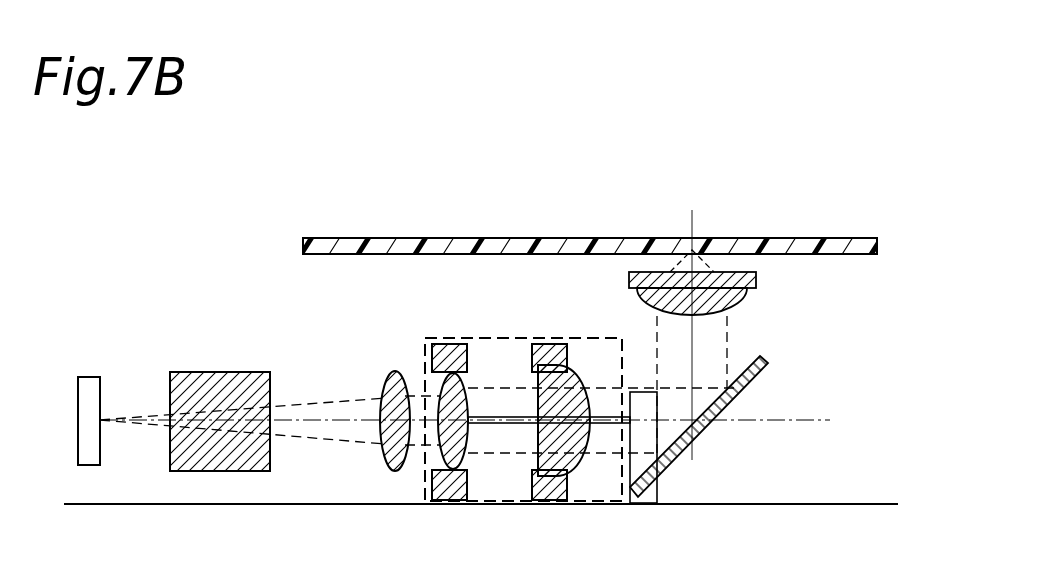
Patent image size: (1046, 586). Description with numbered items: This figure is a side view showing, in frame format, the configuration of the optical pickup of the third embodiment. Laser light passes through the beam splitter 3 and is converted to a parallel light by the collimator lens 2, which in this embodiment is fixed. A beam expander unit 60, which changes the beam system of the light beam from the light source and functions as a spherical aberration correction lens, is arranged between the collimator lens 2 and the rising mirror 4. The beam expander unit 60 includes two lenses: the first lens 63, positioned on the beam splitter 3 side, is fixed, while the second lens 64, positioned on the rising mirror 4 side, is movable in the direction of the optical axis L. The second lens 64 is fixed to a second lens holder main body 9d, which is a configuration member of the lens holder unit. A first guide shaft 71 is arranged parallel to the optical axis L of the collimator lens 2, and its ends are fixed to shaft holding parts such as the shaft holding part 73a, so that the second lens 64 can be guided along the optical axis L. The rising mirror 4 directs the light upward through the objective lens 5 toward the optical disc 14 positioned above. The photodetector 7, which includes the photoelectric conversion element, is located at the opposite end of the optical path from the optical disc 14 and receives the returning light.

The photodetector 7 is at (90, 377).
The beam splitter 3 is at (212, 373).
The optical axis L is at (312, 420).
The collimator lens 2 is at (392, 372).
The beam expander unit 60 is at (480, 338).
The second lens holder main body 9d is at (550, 343).
The first lens 63 is at (460, 403).
The second lens 64 is at (580, 403).
The first guide shaft 71 is at (602, 428).
The shaft holding part 73a is at (657, 490).
The rising mirror 4 is at (768, 366).
The objective lens 5 is at (756, 280).
The optical disc 14 is at (857, 237).